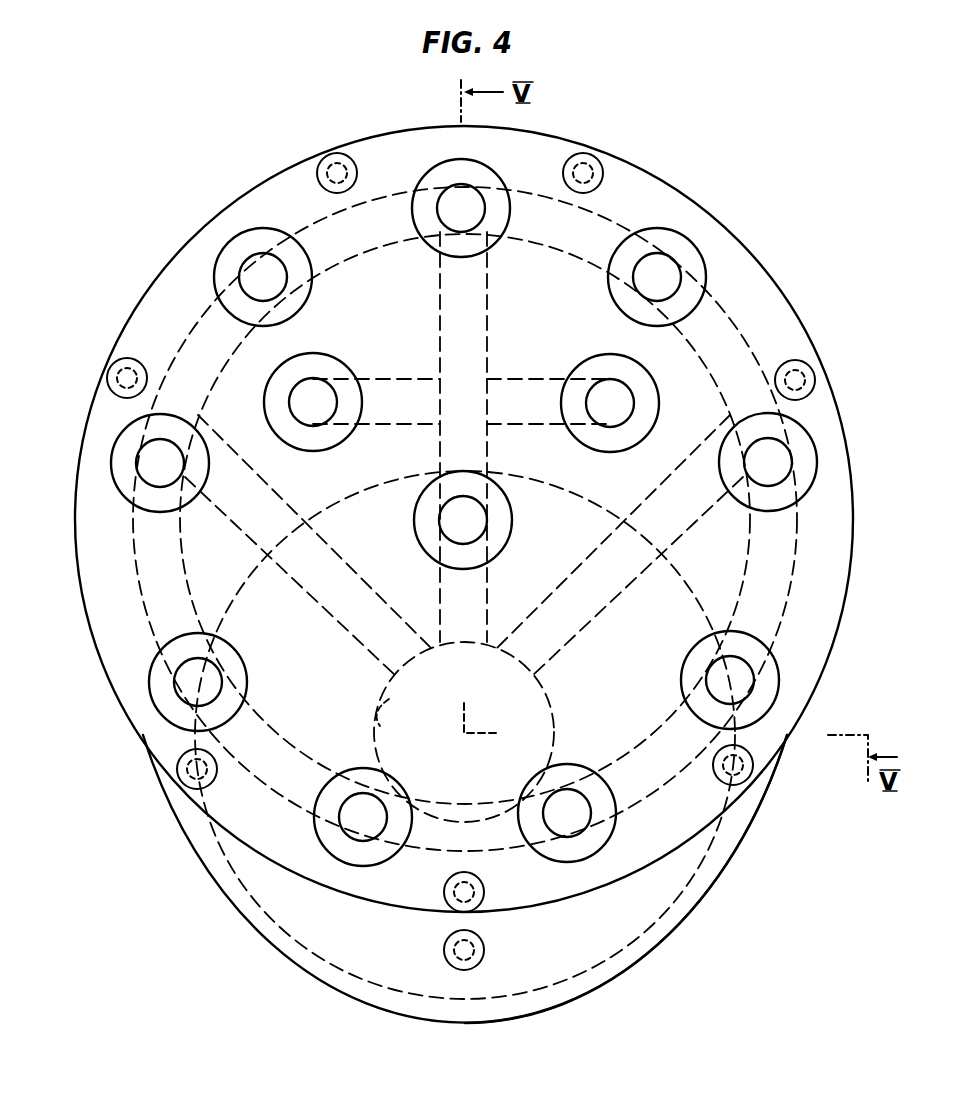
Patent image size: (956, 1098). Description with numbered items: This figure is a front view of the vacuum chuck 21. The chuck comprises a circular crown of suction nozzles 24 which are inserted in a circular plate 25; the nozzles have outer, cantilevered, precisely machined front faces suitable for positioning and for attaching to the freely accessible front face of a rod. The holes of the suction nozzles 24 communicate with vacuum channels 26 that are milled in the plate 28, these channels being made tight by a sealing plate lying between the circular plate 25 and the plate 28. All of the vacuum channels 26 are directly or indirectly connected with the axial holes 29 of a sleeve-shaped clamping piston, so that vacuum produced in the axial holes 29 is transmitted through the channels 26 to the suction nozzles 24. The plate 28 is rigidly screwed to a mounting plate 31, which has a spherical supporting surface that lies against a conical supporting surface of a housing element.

The vacuum chuck 21 is at (752, 840).
The suction nozzles 24 is at (497, 220).
The circular plate 25 is at (220, 226).
The vacuum channels 26 is at (410, 424).
The plate 28 is at (596, 948).
The axial holes 29 is at (386, 698).
The mounting plate 31 is at (684, 893).